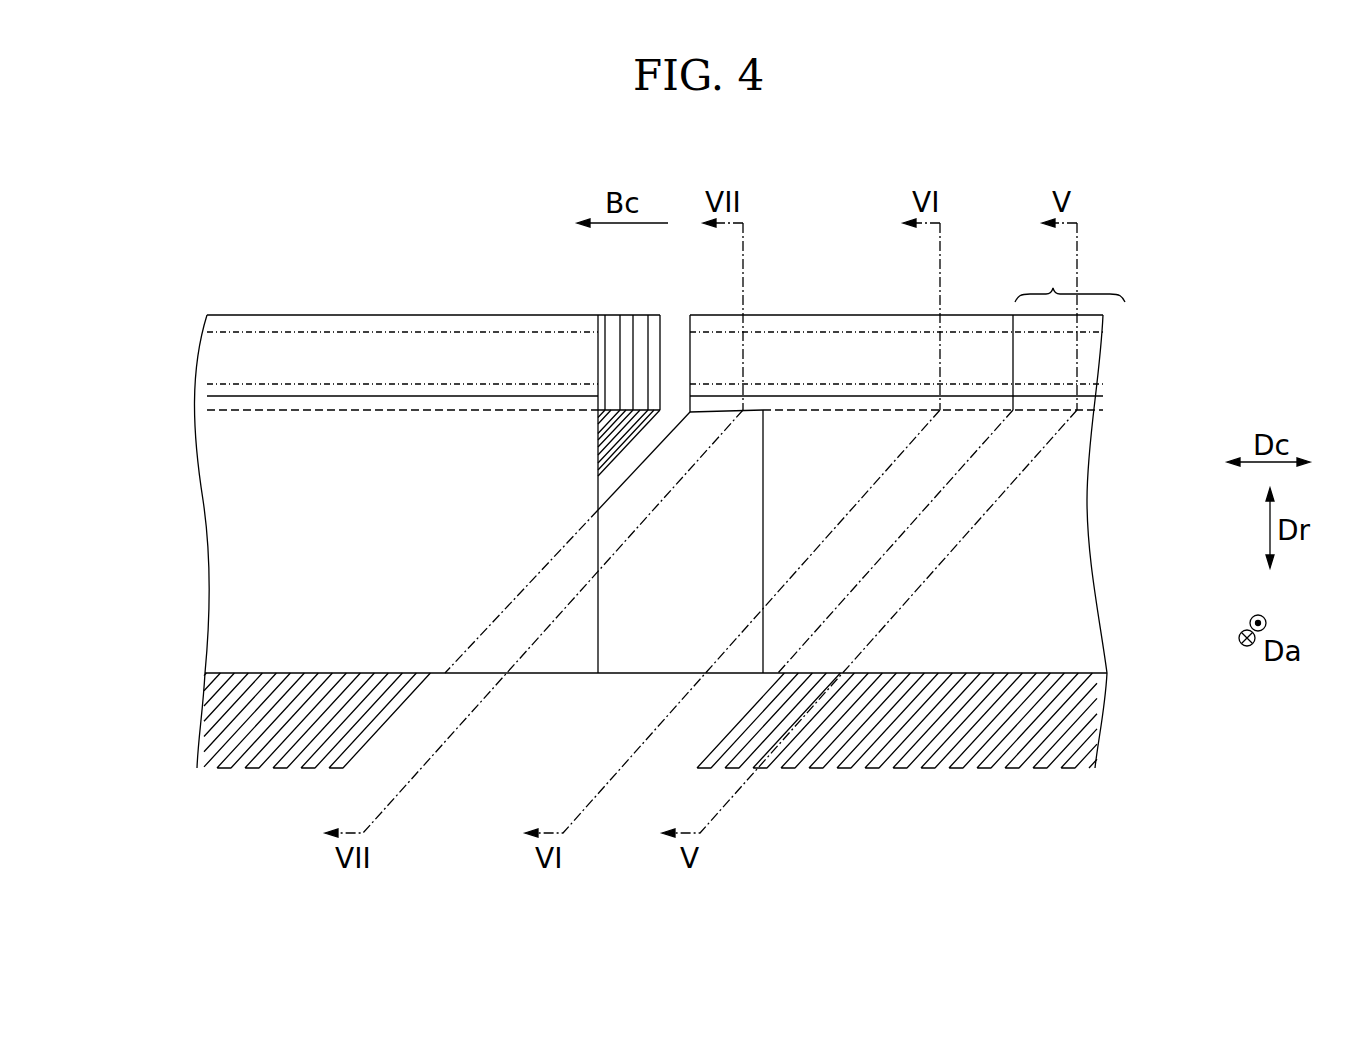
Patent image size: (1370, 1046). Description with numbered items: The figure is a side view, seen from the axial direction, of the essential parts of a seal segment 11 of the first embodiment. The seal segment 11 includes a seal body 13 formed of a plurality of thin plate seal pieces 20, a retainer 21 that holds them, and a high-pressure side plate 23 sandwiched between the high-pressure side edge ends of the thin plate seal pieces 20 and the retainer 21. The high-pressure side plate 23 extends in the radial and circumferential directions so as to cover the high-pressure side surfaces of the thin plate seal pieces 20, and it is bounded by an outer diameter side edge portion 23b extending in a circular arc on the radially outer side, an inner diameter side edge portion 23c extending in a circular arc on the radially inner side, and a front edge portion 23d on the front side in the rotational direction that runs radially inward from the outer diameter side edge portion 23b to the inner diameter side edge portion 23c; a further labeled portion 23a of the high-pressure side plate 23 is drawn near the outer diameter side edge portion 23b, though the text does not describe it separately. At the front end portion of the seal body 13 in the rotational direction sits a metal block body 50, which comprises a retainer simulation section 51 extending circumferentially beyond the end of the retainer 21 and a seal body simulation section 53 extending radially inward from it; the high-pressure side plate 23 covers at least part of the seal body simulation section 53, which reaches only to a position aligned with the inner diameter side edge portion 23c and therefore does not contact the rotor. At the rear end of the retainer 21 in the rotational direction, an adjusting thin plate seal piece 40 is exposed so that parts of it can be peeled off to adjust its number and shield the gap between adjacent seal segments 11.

The seal segment 11 is at (988, 160).
The seal body 13 is at (1070, 278).
The thin plate seal piece 20 is at (1083, 712).
The retainer 21 is at (1087, 350).
The high-pressure side plate 23 is at (1057, 514).
The blade surface 23a is at (1028, 403).
The outer diameter side edge portion 23b is at (1070, 400).
The inner diameter side edge portion 23c is at (1020, 668).
The front edge portion 23d is at (763, 548).
The adjusting thin plate seal piece 40 is at (602, 422).
The block body 50 is at (636, 680).
The retainer simulation section 51 is at (862, 327).
The seal body simulation section 53 is at (678, 425).